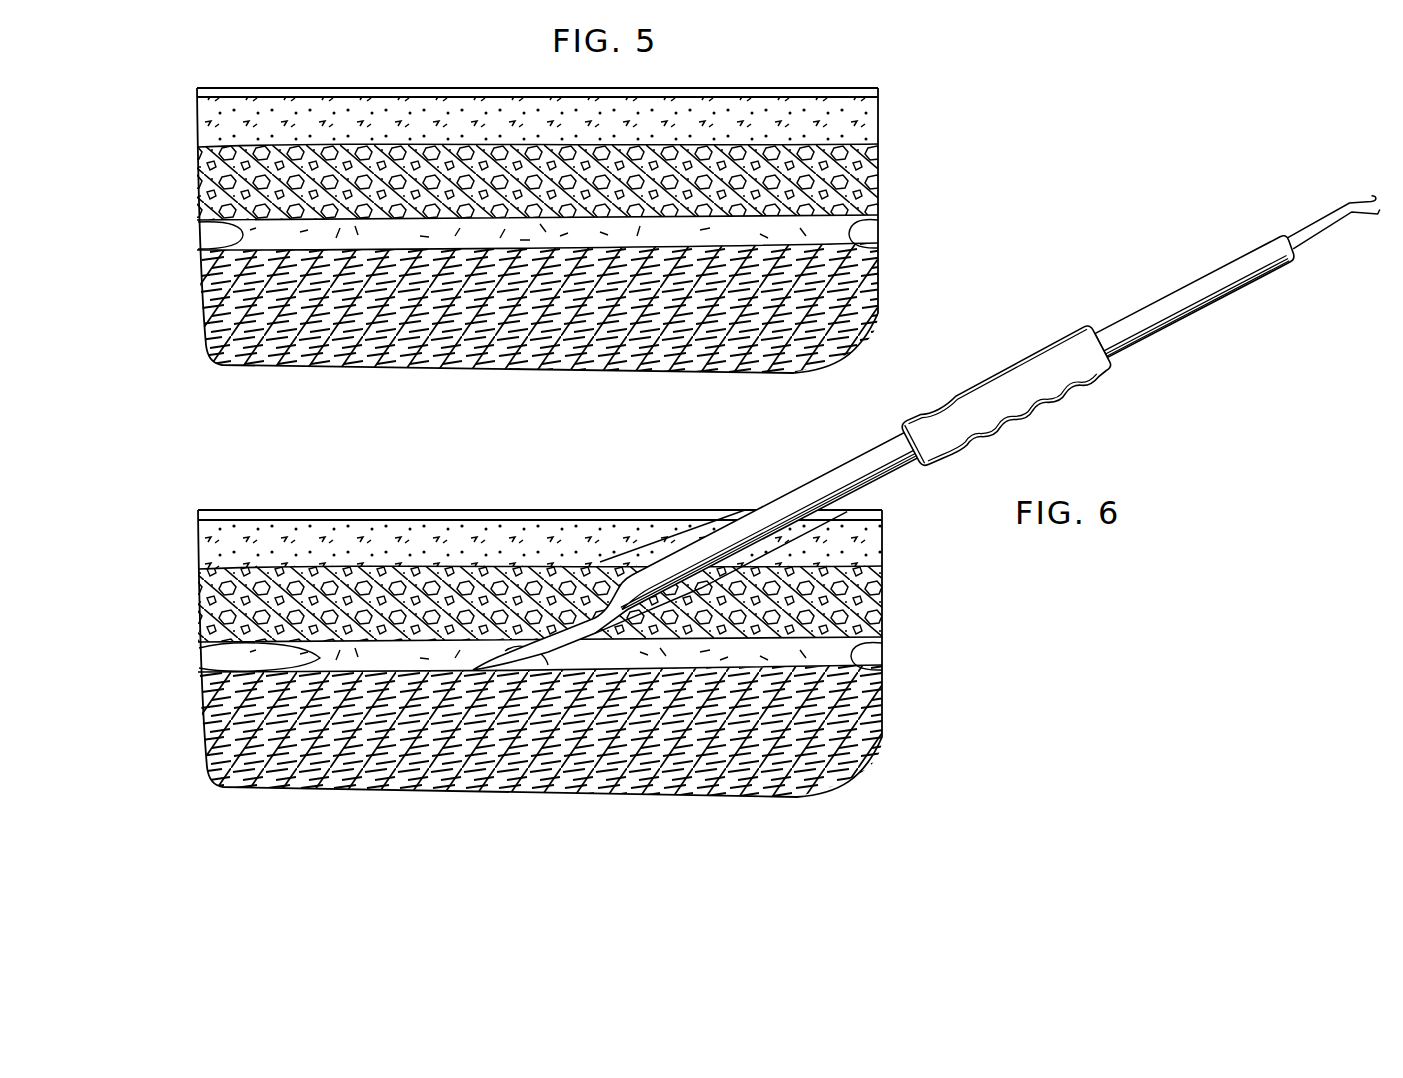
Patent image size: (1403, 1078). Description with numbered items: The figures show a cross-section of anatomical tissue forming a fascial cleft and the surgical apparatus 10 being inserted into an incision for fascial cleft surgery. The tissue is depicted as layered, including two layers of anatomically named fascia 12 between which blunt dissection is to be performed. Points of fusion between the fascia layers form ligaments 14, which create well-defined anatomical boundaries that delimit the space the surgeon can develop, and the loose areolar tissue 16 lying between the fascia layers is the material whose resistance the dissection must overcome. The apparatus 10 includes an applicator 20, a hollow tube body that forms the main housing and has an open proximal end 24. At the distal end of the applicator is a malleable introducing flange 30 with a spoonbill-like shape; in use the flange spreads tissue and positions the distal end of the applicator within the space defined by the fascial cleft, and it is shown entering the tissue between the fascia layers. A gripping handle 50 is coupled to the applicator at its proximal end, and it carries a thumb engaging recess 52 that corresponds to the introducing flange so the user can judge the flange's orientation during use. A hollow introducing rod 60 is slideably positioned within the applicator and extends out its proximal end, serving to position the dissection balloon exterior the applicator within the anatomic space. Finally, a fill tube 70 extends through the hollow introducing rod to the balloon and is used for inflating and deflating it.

In FIG. 6, the surgical apparatus 10 is at (922, 442).
In FIG. 5, the fascia 12 is at (675, 218).
In FIG. 6, the fascia 12 is at (400, 598).
In FIG. 5, the ligaments 14 is at (216, 231).
In FIG. 6, the ligaments 14 is at (317, 670).
In FIG. 5, the loose areolar tissue 16 is at (530, 226).
In FIG. 6, the loose areolar tissue 16 is at (592, 670).
In FIG. 6, the applicator 20 is at (698, 565).
In FIG. 6, the open proximal end 24 is at (769, 529).
In FIG. 6, the malleable introducing flange 30 is at (520, 650).
In FIG. 6, the gripping handle 50 is at (1027, 397).
In FIG. 6, the thumb engaging recess 52 is at (935, 412).
In FIG. 6, the hollow introducing rod 60 is at (1196, 296).
In FIG. 6, the fill tube 70 is at (1334, 223).